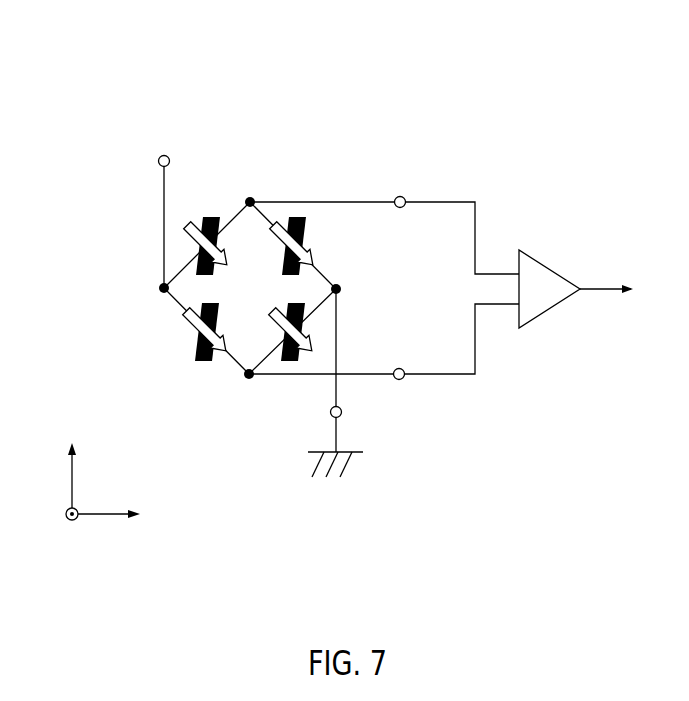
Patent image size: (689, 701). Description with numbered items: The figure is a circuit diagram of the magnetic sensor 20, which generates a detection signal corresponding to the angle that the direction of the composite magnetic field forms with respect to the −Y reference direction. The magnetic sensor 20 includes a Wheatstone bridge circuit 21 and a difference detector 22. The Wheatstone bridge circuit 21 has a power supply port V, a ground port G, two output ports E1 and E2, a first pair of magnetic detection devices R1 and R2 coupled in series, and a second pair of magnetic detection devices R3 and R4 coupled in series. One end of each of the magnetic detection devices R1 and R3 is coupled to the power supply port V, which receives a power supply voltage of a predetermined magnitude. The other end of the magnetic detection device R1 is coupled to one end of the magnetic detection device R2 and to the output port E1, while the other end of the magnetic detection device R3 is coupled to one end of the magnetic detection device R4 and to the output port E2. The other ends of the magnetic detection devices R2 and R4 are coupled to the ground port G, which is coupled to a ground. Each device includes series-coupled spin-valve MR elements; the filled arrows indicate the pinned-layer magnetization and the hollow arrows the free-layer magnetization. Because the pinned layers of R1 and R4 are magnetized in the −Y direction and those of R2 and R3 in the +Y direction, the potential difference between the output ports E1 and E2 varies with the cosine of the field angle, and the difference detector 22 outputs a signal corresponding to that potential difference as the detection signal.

The magnetic sensor 20 is at (383, 96).
The Wheatstone bridge circuit 21 is at (290, 177).
The difference detector 22 is at (550, 264).
The magnetic detection device R1 is at (204, 233).
The magnetic detection device R2 is at (300, 243).
The magnetic detection device R3 is at (202, 342).
The magnetic detection device R4 is at (287, 317).
The output port E1 is at (396, 185).
The output port E2 is at (398, 392).
The power supply port V is at (165, 206).
The ground port G is at (335, 383).